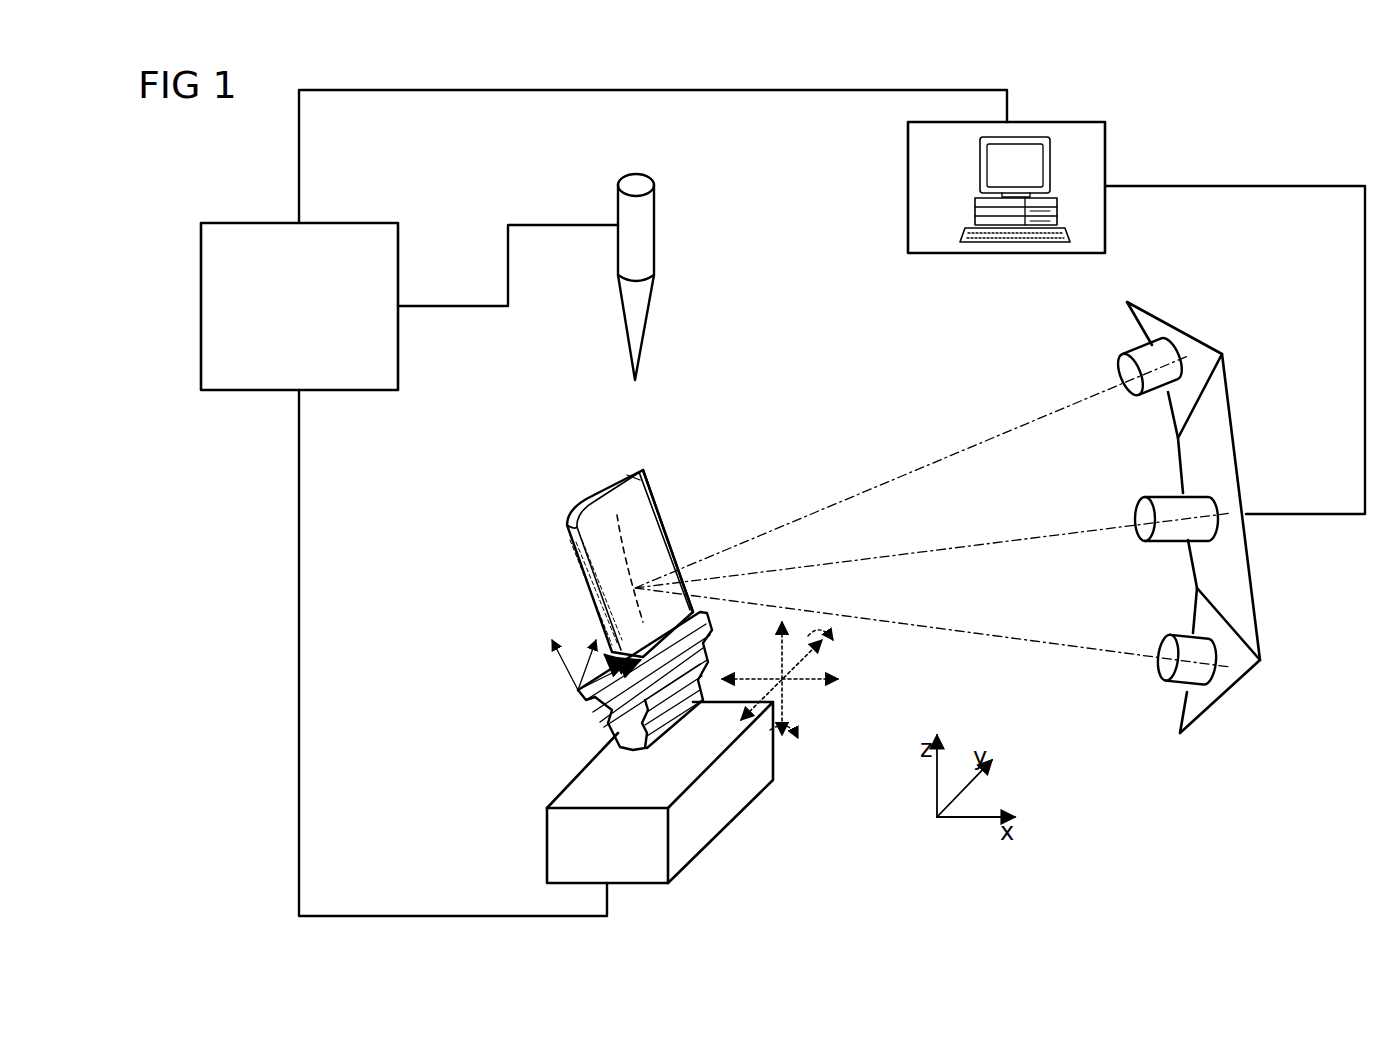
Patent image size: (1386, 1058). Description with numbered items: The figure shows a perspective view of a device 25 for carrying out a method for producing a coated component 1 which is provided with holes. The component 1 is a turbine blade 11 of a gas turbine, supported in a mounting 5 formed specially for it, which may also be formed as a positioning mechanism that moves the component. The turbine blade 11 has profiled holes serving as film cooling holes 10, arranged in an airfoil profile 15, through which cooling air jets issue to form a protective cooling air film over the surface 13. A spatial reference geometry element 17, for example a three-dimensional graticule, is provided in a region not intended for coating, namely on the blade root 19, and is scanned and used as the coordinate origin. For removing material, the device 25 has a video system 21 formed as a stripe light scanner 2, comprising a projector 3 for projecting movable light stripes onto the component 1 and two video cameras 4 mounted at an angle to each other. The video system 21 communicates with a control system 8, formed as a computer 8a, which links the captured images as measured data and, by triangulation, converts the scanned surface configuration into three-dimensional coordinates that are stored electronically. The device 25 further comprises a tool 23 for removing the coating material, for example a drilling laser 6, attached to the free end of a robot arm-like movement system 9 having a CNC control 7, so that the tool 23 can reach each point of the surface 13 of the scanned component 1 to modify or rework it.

The component 1 is at (638, 588).
The turbine blade 11 is at (638, 588).
The stripe light scanner 2 is at (1227, 440).
The projector 3 is at (1167, 541).
The video camera 4 is at (1138, 357).
The mounting 5 is at (733, 805).
The drilling laser 6 is at (626, 304).
The tool 23 is at (588, 277).
The CNC control 7 is at (201, 296).
The control system 8 is at (1006, 156).
The computer 8a is at (975, 200).
The movement system 9 is at (588, 270).
The film cooling hole 10 is at (628, 497).
The surface 13 is at (711, 541).
The airfoil profile 15 is at (658, 514).
The reference geometry element 17 is at (605, 683).
The blade root 19 is at (607, 718).
The video system 21 is at (1192, 485).
The device 25 is at (276, 828).